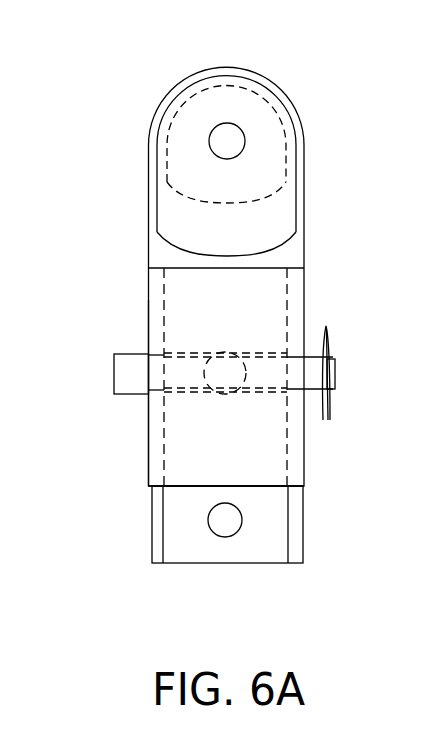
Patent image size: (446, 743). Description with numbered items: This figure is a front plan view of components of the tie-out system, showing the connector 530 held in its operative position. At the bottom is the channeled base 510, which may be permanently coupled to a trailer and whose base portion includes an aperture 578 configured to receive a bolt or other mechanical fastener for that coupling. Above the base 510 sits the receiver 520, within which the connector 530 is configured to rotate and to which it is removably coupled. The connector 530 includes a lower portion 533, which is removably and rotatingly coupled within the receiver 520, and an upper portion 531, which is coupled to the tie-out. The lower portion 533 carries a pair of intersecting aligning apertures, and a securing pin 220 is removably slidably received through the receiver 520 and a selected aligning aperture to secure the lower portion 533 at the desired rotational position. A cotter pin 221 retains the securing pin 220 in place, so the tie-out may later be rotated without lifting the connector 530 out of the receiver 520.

The connector 530 is at (70, 97).
The upper portion 531 is at (286, 254).
The lower portion 533 is at (287, 457).
The receiver 520 is at (147, 453).
The securing pin 220 is at (122, 372).
The cotter pin 221 is at (328, 329).
The base 510 is at (207, 548).
The aperture 578 is at (231, 530).